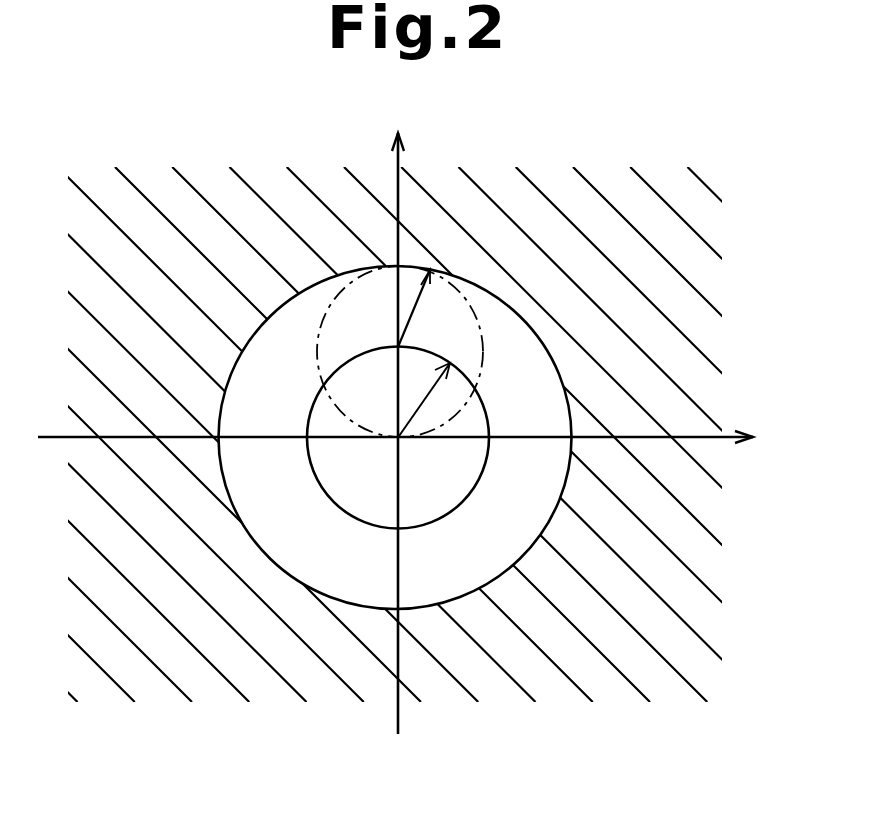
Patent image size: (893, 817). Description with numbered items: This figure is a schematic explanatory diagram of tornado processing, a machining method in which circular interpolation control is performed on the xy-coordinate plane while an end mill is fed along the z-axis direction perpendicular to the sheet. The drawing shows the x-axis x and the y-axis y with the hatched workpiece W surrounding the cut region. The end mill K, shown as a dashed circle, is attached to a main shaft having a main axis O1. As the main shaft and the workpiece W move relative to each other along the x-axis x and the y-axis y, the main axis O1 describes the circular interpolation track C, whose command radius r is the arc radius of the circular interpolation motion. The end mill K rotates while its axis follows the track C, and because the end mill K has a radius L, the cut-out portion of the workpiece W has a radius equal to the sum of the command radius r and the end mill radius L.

The workpiece W is at (237, 335).
The circular interpolation track C is at (452, 506).
The end mill K is at (480, 334).
The radius of the end mill L is at (418, 294).
The main axis O1 is at (397, 346).
The command radius r is at (424, 400).
The x-axis x is at (403, 453).
The y-axis y is at (412, 425).